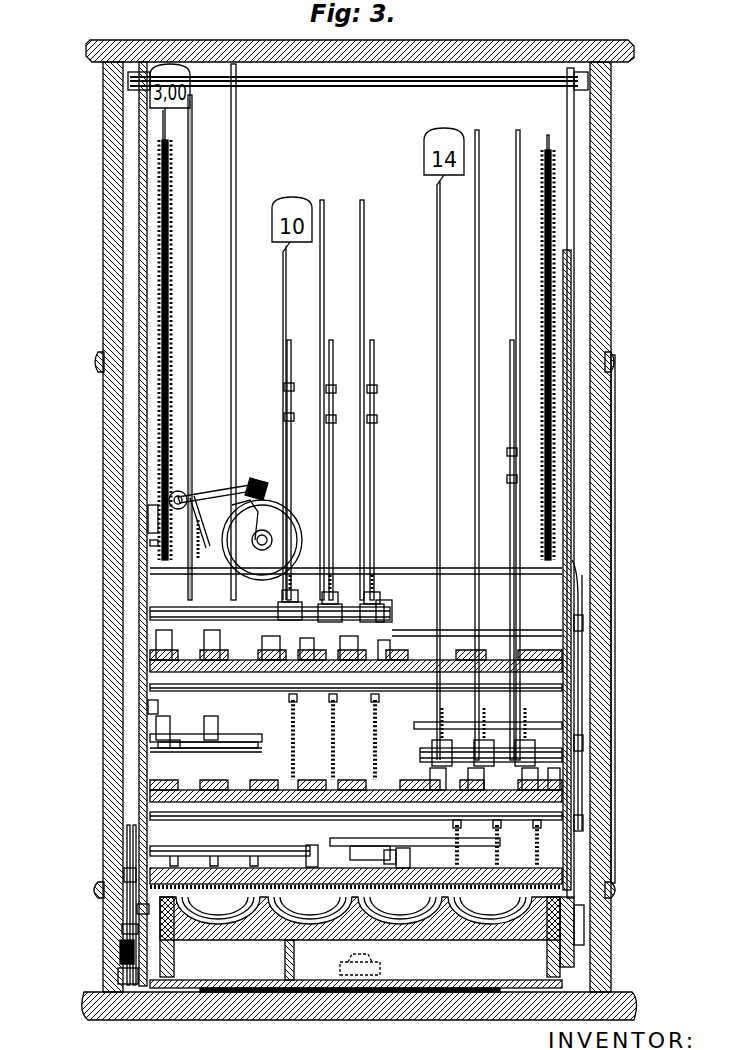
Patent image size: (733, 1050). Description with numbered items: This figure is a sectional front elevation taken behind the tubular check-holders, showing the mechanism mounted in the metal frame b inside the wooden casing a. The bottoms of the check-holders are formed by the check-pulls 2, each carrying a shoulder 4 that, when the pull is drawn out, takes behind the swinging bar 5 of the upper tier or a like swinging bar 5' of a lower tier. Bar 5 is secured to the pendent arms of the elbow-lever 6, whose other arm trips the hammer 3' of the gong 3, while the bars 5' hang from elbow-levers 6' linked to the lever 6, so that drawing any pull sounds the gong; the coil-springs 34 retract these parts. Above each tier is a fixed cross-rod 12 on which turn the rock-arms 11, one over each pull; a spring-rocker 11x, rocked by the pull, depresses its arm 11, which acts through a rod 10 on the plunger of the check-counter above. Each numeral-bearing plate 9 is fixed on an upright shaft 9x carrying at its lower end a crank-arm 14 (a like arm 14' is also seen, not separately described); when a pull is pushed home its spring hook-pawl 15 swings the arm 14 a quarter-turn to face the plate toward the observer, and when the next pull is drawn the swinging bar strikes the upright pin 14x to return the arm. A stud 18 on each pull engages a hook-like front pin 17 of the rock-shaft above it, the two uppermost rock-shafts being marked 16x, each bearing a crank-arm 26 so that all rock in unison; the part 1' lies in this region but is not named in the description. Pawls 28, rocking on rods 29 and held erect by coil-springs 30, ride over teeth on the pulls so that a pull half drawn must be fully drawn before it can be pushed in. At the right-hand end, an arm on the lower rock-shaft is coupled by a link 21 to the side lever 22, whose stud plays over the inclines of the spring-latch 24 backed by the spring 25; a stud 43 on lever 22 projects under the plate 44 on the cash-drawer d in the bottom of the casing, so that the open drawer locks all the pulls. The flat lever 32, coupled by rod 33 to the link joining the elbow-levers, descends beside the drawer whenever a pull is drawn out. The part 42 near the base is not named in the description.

The casing a is at (103, 246).
The metal frame b is at (139, 326).
The numeral-bearing plate 9 is at (176, 101).
The upright shaft 9x is at (190, 368).
The coil-spring 34 is at (172, 408).
The rod 10 is at (286, 462).
The gong 3 is at (262, 540).
The hammer 3' is at (218, 519).
The elbow-lever 6 is at (268, 660).
The elbow-lever 6' is at (140, 709).
The cross-rod 12 is at (244, 608).
The rock-arm 11 is at (384, 596).
The spring-rocker 11x is at (384, 638).
The swinging bar 5 is at (477, 625).
The swinging bar 5' is at (212, 740).
The shoulder 4 is at (283, 748).
The crank-arm 14 is at (389, 713).
The stop 14' is at (428, 709).
The upright pin 14x is at (380, 654).
The check-pull 2 is at (208, 692).
The rod 29 is at (245, 692).
The pawl 28 is at (392, 692).
The coil-spring 30 is at (337, 724).
The stud 18 is at (238, 736).
The rock-shaft 16x is at (208, 731).
The lug 1' is at (179, 732).
The front pin 17 is at (366, 846).
The spring hook-pawl 15 is at (390, 856).
The rod 33 is at (580, 590).
The crank-arm 26 is at (584, 623).
The cash-drawer d is at (376, 961).
The flat lever 32 is at (584, 938).
The rod 42 is at (306, 1000).
The link 21 is at (150, 838).
The spring 25 is at (140, 878).
The plate 44 is at (150, 910).
The side lever 22 is at (136, 928).
The stud 43 is at (130, 946).
The latch-lever 24 is at (136, 984).